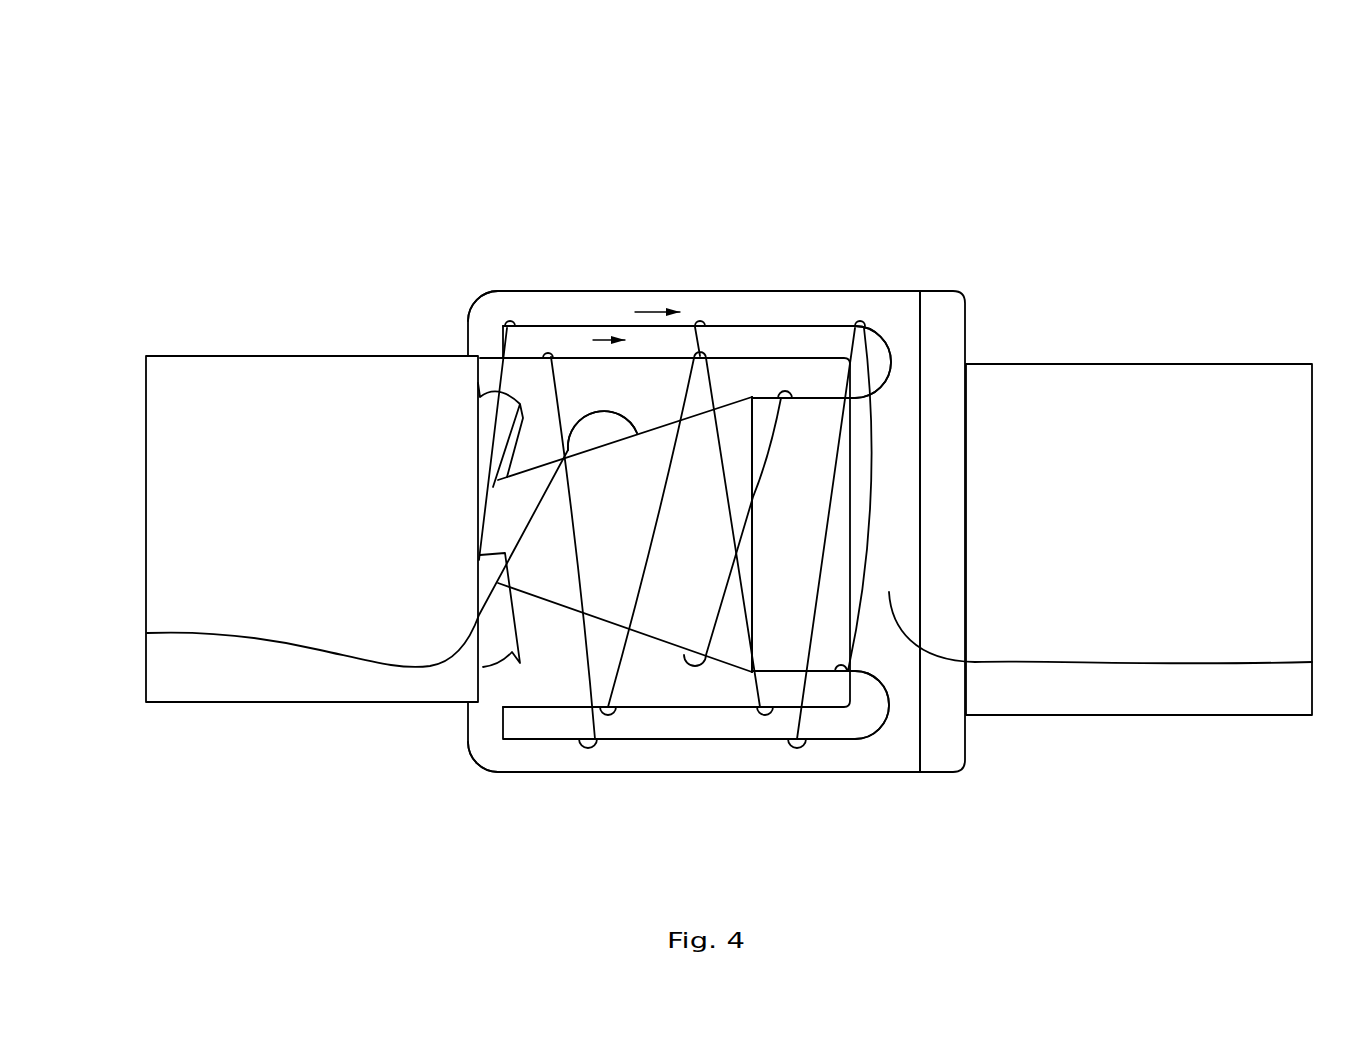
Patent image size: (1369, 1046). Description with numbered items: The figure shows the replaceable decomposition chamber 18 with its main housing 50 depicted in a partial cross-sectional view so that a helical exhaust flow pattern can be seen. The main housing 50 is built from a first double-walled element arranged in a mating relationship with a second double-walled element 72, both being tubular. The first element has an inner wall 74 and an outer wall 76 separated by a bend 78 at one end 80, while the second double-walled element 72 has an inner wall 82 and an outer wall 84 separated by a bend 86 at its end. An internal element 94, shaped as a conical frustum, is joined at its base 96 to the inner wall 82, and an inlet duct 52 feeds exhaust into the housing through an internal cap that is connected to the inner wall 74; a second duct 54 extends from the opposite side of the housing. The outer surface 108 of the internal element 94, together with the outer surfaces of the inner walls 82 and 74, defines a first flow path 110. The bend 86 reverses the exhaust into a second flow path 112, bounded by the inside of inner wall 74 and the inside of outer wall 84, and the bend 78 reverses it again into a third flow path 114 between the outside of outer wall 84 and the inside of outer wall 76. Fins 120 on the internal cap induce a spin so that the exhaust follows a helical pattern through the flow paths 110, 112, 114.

The decomposition chamber 18 is at (740, 108).
The main housing 50 is at (682, 232).
The inlet duct 52 is at (303, 355).
The second conduit 54 is at (1108, 362).
The second double-walled element 72 is at (808, 552).
The inner wall 74 is at (757, 358).
The outer wall 76 is at (546, 291).
The bend 78 is at (473, 303).
The end 80 is at (500, 291).
The inner wall 82 is at (806, 400).
The outer wall 84 is at (778, 327).
The bend 86 is at (884, 334).
The internal element 94 is at (668, 637).
The base 96 is at (755, 540).
The outer surface 108 is at (591, 455).
The first flow path 110 is at (662, 396).
The second flow path 112 is at (593, 340).
The third flow path 114 is at (635, 312).
The fins 120 is at (483, 458).